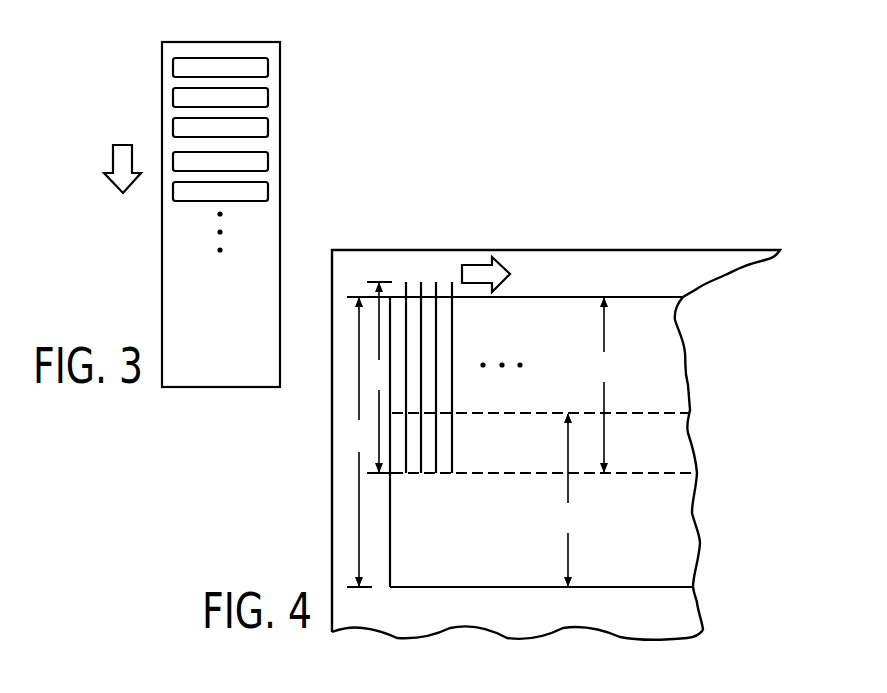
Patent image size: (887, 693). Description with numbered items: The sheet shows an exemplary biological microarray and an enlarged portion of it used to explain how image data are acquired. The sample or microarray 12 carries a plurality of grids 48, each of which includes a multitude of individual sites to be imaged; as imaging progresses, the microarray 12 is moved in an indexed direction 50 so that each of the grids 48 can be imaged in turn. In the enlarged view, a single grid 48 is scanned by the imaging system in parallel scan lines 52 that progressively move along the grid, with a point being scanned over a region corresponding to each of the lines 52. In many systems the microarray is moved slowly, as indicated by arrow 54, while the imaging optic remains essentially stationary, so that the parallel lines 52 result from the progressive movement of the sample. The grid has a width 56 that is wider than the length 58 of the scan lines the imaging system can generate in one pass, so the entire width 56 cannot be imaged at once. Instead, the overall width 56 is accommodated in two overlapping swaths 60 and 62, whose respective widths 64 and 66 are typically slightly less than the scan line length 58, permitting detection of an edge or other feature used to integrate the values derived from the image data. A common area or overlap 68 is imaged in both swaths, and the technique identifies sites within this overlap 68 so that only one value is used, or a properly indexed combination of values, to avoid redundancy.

In FIG. 3, the microarray 12 is at (162, 212).
In FIG. 4, the microarray 12 is at (555, 250).
In FIG. 3, the grid 48 is at (173, 127).
In FIG. 4, the grid 48 is at (568, 352).
In FIG. 3, the indexed direction 50 is at (110, 160).
In FIG. 4, the parallel scan lines 52 is at (406, 372).
In FIG. 4, the arrow 54 is at (483, 265).
In FIG. 4, the width 56 is at (368, 442).
In FIG. 4, the length 58 is at (377, 377).
In FIG. 4, the first swath 60 is at (658, 352).
In FIG. 4, the second swath 62 is at (658, 545).
In FIG. 4, the width of first swath 64 is at (605, 385).
In FIG. 4, the width of second swath 66 is at (568, 500).
In FIG. 4, the overlap 68 is at (658, 457).